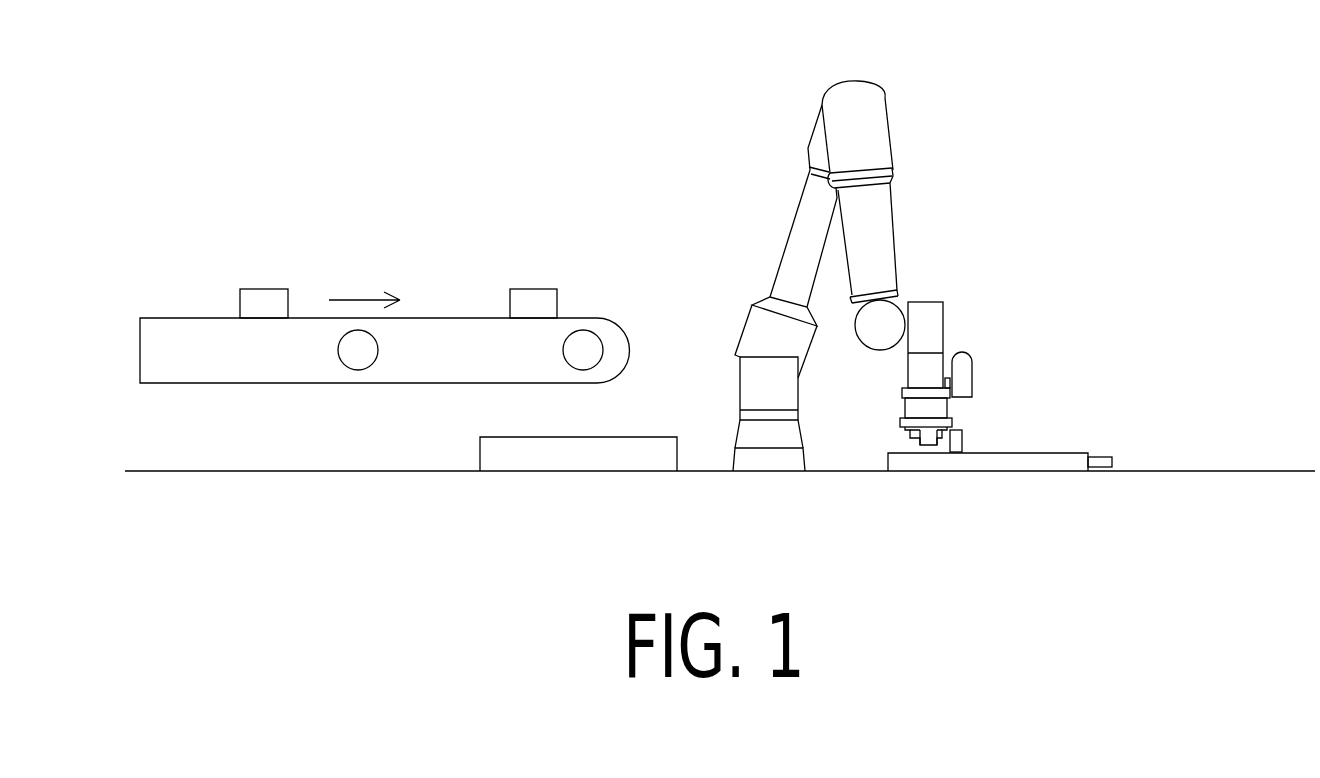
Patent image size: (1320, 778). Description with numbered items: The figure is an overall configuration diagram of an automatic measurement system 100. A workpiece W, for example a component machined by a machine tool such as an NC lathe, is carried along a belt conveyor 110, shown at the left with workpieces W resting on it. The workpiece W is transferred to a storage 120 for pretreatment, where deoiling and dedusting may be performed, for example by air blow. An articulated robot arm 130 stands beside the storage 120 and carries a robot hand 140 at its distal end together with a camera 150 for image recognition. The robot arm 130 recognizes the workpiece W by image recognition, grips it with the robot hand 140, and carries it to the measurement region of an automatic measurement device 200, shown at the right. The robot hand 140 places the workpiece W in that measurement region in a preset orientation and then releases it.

The automatic measurement system 100 is at (1000, 118).
The belt conveyor 110 is at (430, 317).
The workpiece W is at (527, 297).
The storage 120 is at (541, 472).
The robot arm 130 is at (792, 228).
The robot hand 140 is at (915, 447).
The camera 150 is at (974, 360).
The automatic measurement device 200 is at (1055, 460).